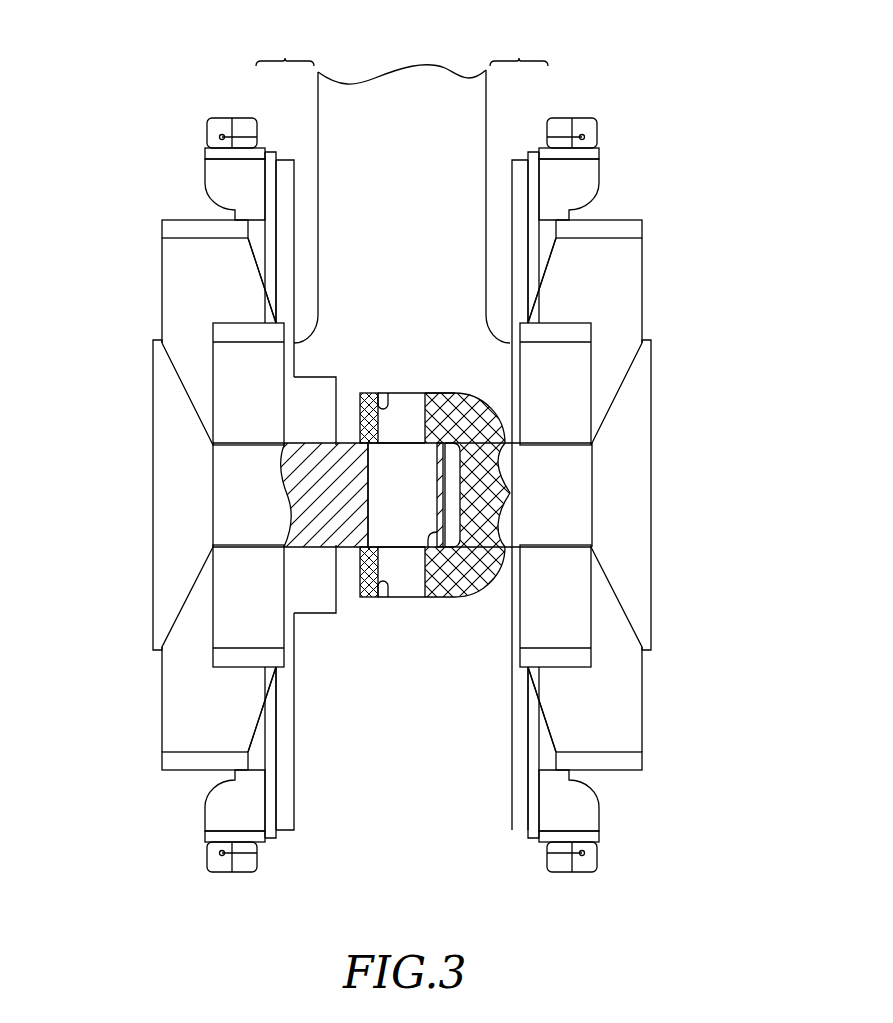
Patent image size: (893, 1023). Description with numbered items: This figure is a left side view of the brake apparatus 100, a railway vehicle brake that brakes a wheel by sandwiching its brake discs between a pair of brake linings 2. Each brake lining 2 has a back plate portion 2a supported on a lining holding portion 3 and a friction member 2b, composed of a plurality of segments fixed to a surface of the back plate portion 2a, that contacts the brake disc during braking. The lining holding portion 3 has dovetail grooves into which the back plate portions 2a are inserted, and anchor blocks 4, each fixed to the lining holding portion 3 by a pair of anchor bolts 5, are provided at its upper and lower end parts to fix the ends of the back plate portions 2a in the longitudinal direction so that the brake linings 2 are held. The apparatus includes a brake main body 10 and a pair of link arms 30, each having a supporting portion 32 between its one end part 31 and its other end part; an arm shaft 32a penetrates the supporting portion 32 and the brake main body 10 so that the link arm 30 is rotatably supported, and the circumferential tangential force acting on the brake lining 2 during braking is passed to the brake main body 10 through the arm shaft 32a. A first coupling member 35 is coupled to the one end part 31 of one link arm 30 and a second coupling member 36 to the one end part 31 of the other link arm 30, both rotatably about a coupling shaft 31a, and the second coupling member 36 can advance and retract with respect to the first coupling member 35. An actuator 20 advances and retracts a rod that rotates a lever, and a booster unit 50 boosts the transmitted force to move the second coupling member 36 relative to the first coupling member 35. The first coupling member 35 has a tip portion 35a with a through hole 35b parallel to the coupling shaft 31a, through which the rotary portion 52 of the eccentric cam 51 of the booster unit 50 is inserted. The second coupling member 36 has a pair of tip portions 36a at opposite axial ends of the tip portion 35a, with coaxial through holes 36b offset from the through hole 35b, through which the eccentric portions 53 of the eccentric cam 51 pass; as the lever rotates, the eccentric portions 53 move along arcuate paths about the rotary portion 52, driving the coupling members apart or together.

The brake apparatus 100 is at (652, 88).
The brake main body 10 is at (455, 76).
The brake lining 2 is at (402, 50).
The back plate portion 2a is at (270, 165).
The friction member 2b is at (285, 163).
The lining holding portion 3 is at (257, 238).
The anchor block 4 is at (215, 168).
The anchor bolt 5 is at (240, 124).
The link arm 30 is at (157, 218).
The one end part 31 is at (222, 358).
The coupling shaft 31a is at (218, 328).
The supporting portion 32 is at (168, 262).
The arm shaft 32a is at (170, 231).
The actuator 20 is at (303, 417).
The first coupling member 35 is at (225, 490).
The tip portion 35a is at (452, 547).
The through hole 35b is at (432, 560).
The second coupling member 36 is at (580, 490).
The tip portion 36a is at (375, 396).
The through hole 36b is at (383, 396).
The booster unit 50 is at (428, 389).
The eccentric cam 51 is at (420, 393).
The rotary portion 52 is at (363, 527).
The eccentric portion 53 is at (412, 405).